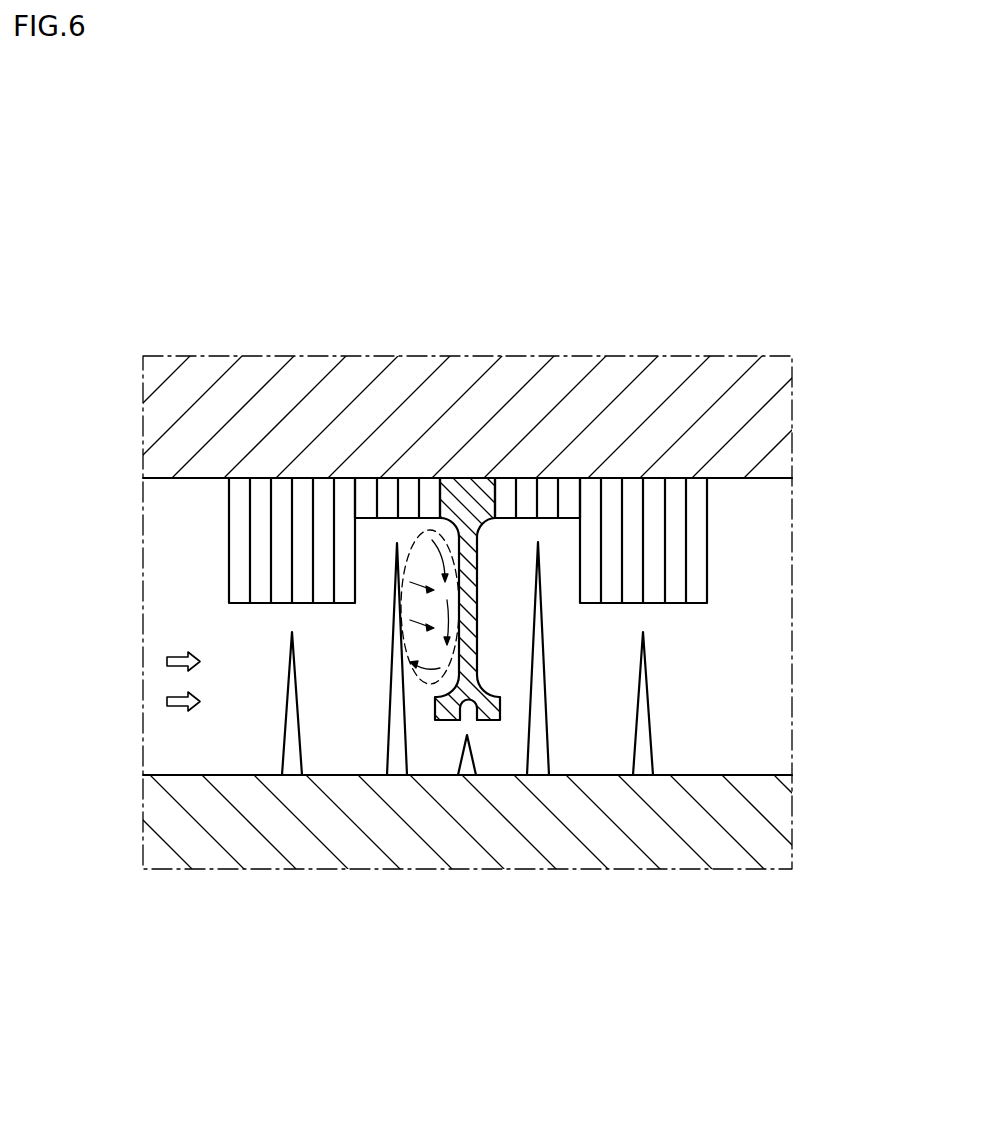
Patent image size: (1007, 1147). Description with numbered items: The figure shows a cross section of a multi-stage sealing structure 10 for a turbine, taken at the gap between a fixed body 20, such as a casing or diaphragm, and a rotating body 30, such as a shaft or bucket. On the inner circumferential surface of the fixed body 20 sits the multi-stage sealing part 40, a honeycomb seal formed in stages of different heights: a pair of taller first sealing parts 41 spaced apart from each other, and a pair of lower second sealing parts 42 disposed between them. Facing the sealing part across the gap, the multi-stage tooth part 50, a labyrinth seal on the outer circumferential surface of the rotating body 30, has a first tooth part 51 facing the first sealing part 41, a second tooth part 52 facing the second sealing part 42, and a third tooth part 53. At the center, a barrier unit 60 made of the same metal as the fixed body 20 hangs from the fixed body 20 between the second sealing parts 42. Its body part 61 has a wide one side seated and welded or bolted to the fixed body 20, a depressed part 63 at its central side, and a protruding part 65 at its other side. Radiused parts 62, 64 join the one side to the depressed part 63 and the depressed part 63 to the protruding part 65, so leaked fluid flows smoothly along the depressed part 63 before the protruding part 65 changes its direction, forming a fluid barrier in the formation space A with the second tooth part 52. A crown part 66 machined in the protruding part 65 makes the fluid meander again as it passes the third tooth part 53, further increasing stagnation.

The heat exchange apparatus 10 is at (162, 238).
The fixed body 20 is at (767, 430).
The rotating body 30 is at (742, 823).
The multi-stage sealing part 40 is at (450, 432).
The first sealing part 41 is at (300, 492).
The second sealing part 42 is at (390, 492).
The multi-stage tooth part 50 is at (441, 761).
The first tooth part 51 is at (292, 752).
The second tooth part 52 is at (398, 737).
The third tooth part 53 is at (468, 733).
The barrier unit 60 is at (536, 588).
The body part 61 is at (455, 478).
The radiused part 62 is at (480, 526).
The depressed part 63 is at (478, 610).
The radiused part 64 is at (483, 683).
The protruding part 65 is at (500, 707).
The crown part 66 is at (468, 705).
The formation space A is at (393, 605).